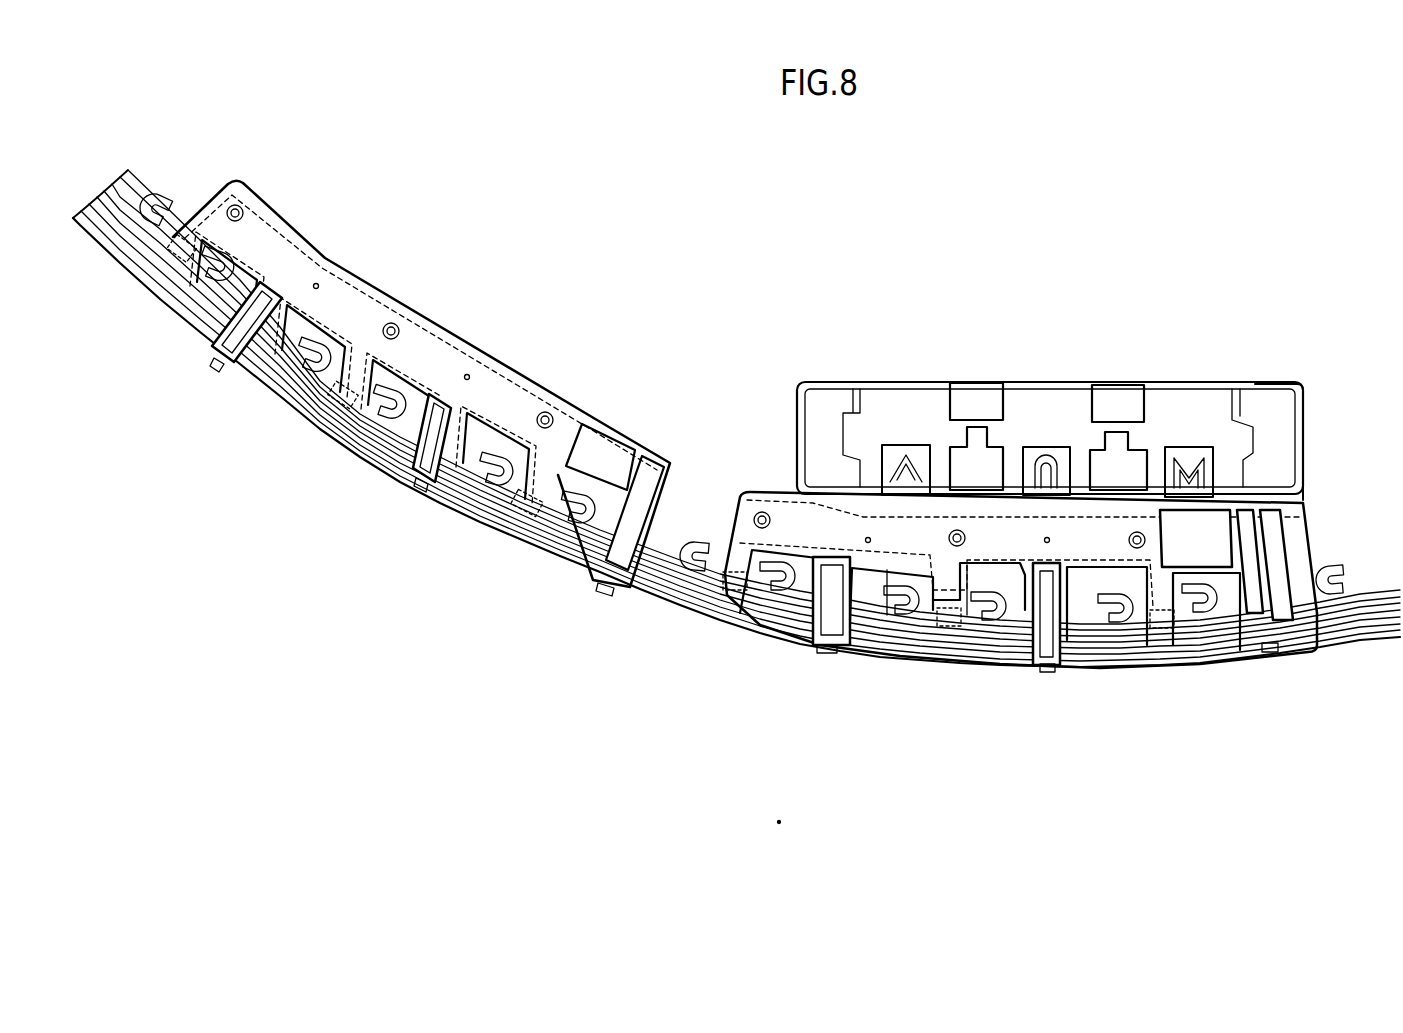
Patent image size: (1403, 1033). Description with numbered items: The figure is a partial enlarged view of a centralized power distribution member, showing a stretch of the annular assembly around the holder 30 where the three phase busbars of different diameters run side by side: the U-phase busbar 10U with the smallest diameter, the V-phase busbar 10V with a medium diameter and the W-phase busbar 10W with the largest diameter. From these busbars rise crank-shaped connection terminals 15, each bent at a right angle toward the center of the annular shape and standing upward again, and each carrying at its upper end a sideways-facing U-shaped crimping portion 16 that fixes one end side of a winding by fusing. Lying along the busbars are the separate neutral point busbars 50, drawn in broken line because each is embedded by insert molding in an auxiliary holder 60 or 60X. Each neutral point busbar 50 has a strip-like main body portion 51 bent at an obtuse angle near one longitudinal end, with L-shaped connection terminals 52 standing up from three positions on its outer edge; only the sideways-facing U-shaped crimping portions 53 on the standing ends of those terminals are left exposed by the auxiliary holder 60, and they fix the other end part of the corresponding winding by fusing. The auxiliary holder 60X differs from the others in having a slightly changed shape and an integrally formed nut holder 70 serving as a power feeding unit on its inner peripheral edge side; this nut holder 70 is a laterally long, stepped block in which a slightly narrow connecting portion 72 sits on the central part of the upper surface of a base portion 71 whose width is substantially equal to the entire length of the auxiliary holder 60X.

The connection terminal 15 is at (122, 232).
The crimping portion 16 is at (168, 210).
The holder 30 is at (1293, 669).
The neutral point busbar 50 is at (486, 360).
The main body portion 51 is at (308, 236).
The connection terminal 52 is at (162, 305).
The crimping portion 53 is at (226, 260).
The auxiliary holder 60 is at (552, 395).
The auxiliary holder 60X is at (736, 492).
The nut holder 70 is at (1307, 472).
The base portion 71 is at (1305, 408).
The connecting portion 72 is at (1247, 403).
The U-phase busbar 10U is at (593, 528).
The V-phase busbar 10V is at (643, 550).
The W-phase busbar 10W is at (796, 628).